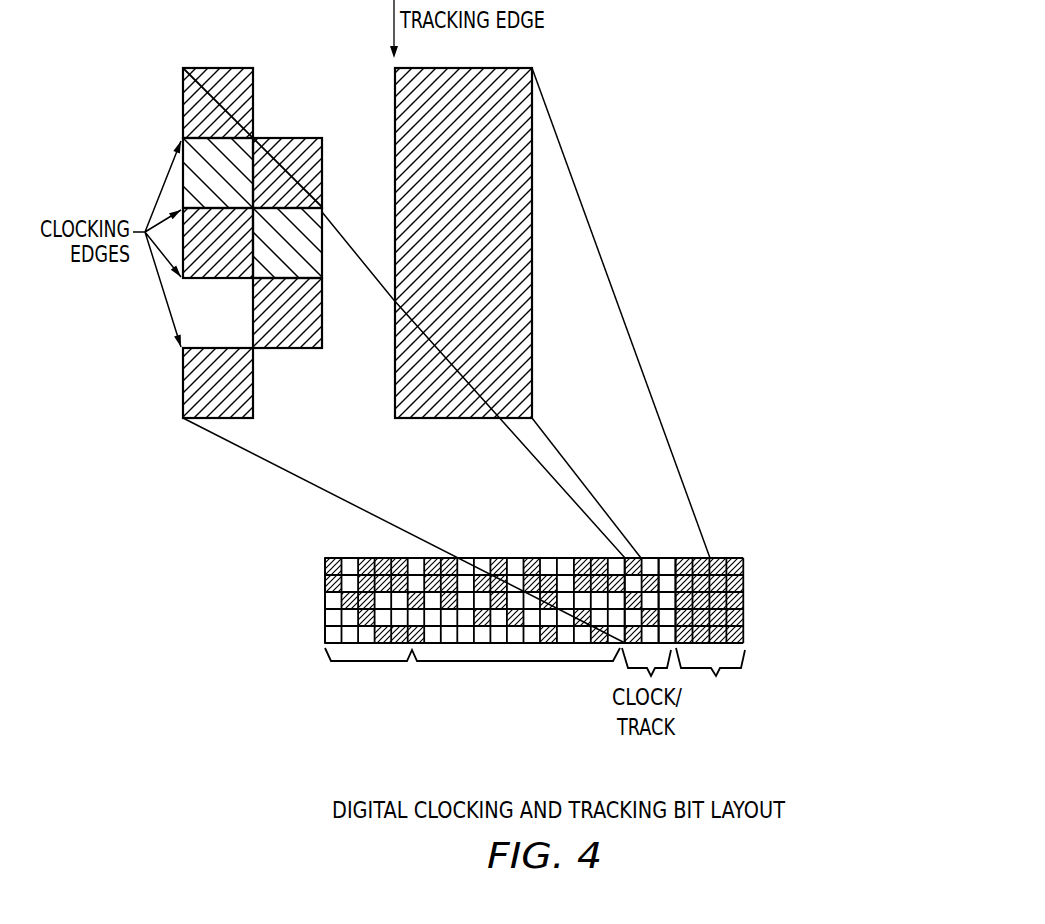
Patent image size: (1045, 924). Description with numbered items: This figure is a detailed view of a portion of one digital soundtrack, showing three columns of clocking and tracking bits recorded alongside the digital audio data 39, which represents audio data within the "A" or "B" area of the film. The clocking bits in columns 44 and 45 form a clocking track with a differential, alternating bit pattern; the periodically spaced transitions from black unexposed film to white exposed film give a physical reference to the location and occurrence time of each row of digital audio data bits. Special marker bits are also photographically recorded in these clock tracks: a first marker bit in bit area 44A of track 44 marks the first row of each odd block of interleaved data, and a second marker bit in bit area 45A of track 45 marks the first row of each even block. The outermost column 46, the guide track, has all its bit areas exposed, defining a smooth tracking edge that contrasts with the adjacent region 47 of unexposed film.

The digital audio data 39 is at (475, 653).
The clock track column 44 is at (215, 447).
The bit area of track 44 44A is at (183, 137).
The clock track column 45 is at (292, 447).
The bit area of track 45 45A is at (322, 212).
The guide track column 46 is at (672, 557).
The adjacent region of unexposed film 47 is at (745, 565).